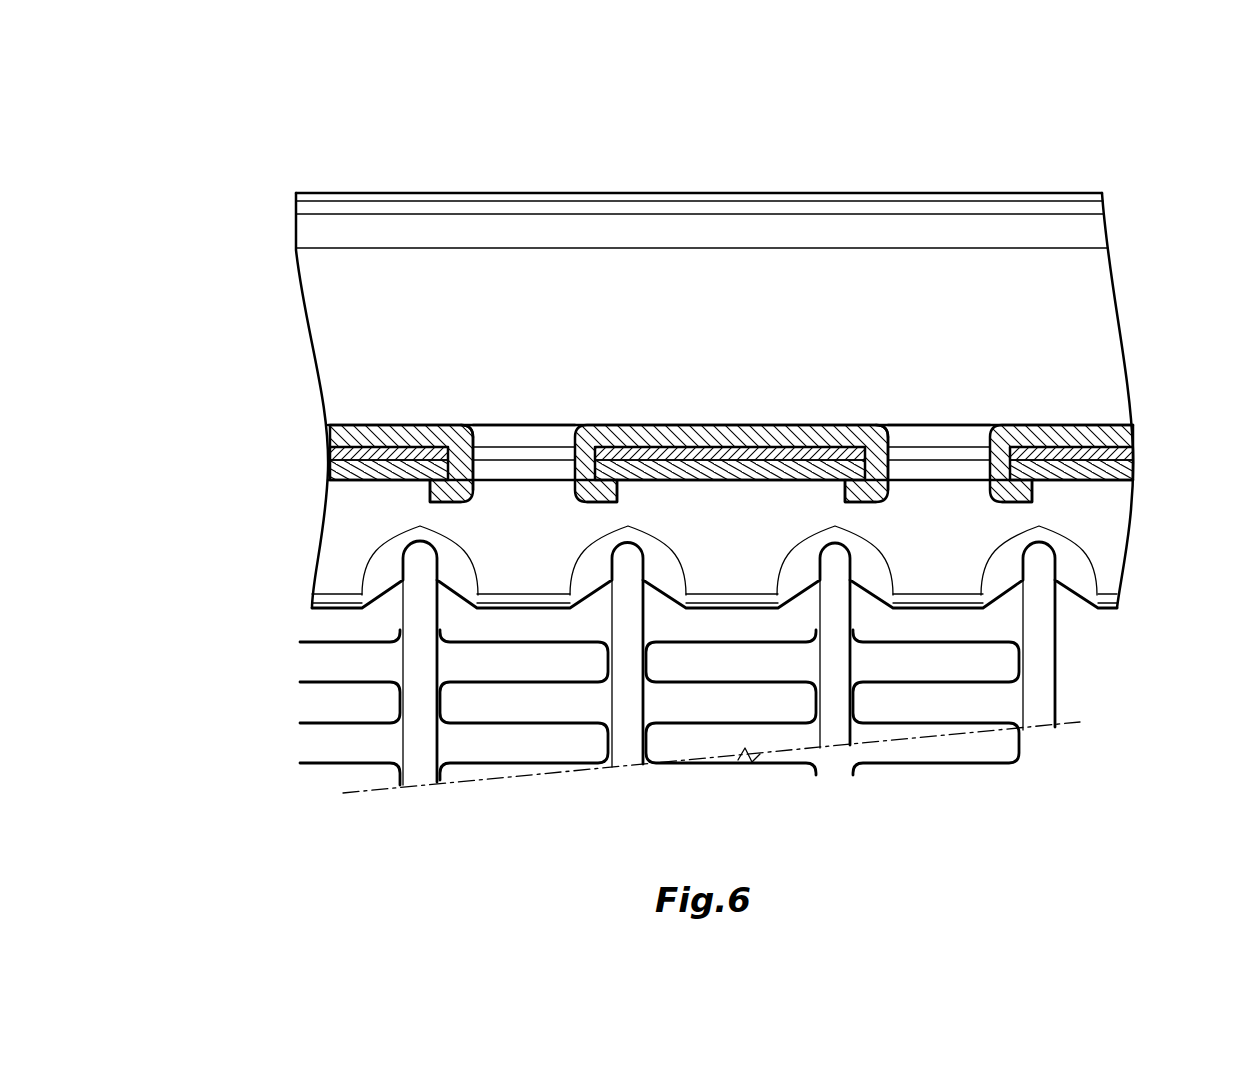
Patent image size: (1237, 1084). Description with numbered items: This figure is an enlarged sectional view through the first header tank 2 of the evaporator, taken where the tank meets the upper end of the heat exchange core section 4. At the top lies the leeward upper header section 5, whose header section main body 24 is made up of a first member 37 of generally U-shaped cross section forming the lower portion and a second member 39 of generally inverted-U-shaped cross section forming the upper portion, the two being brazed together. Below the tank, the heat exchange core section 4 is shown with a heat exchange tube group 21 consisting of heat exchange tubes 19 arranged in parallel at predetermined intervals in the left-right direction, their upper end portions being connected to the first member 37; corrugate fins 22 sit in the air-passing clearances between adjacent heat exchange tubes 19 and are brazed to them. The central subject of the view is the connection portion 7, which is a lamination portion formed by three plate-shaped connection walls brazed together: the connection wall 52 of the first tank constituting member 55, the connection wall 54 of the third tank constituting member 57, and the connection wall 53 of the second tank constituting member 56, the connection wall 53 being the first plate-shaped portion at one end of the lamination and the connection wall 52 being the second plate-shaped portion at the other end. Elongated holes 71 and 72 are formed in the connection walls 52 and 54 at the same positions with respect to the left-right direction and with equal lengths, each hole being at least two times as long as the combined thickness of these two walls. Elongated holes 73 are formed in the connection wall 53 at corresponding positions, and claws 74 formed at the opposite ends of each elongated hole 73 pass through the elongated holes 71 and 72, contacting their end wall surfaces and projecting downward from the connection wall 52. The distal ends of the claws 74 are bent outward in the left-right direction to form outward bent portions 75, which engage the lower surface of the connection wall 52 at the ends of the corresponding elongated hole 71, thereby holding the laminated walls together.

The first header tank 2 is at (563, 176).
The heat exchange core section 4 is at (288, 700).
The leeward upper header section 5 is at (352, 225).
The connection portion 7 is at (1130, 430).
The heat exchange tube 19 is at (418, 775).
The heat exchange tube group 21 is at (1060, 673).
The corrugate fin 22 is at (497, 768).
The header section main body 24 is at (745, 205).
The first member 37 is at (333, 597).
The second member 39 is at (704, 227).
The connection wall 52 is at (330, 472).
The connection wall 53 is at (334, 430).
The connection wall 54 is at (330, 452).
The first tank constituting member 55 is at (312, 580).
The second tank constituting member 56 is at (325, 258).
The third tank constituting member 57 is at (1133, 455).
The elongated hole 71 is at (473, 485).
The elongated hole 72 is at (462, 428).
The elongated hole 73 is at (520, 430).
The claw 74 is at (483, 432).
The outward bent portion 75 is at (432, 492).